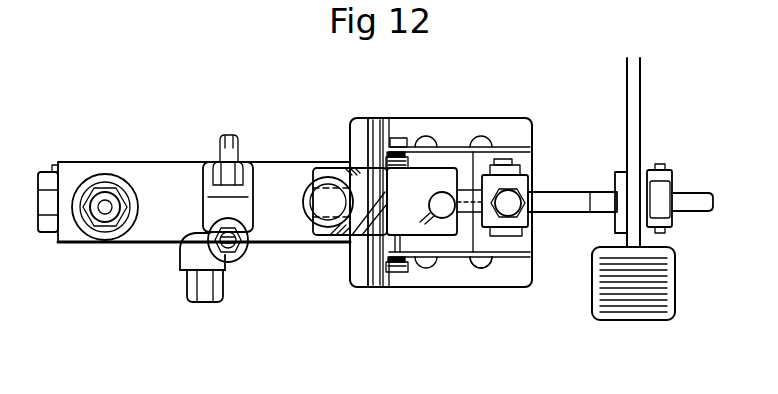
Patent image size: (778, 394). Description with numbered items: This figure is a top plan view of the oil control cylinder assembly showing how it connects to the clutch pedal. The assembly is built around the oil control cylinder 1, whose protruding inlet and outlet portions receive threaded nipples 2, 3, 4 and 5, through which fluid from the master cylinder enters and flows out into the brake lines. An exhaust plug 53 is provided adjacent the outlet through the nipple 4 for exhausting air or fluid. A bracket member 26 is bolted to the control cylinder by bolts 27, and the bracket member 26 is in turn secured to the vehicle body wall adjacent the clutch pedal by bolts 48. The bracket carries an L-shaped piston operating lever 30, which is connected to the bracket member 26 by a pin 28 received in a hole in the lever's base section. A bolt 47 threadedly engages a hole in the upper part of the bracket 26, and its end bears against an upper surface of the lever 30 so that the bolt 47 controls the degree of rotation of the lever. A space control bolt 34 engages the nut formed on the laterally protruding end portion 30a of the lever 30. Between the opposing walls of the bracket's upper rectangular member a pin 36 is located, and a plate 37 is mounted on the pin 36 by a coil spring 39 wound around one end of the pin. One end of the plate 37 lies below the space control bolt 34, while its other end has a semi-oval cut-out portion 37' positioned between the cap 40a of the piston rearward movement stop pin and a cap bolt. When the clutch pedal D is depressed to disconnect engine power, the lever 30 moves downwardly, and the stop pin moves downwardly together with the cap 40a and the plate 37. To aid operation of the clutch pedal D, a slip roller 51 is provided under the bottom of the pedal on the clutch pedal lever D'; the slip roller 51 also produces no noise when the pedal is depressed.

The oil control cylinder 1 is at (172, 158).
The nipple 2 is at (190, 288).
The nipple 3 is at (46, 234).
The nipple 4 is at (243, 243).
The nipple 5 is at (100, 187).
The bracket member 26 is at (386, 287).
The bolt 27 is at (388, 271).
The pin 28 is at (503, 236).
The L-shaped piston operating lever 30 is at (567, 205).
The laterally protruding end portion 30a is at (465, 189).
The space control bolt 34 is at (441, 194).
The pin 36 is at (403, 264).
The plate 37 is at (349, 159).
The semi-oval cut-out portion 37' is at (327, 270).
The coil spring 39 is at (402, 147).
The cap 40a is at (322, 200).
The bolt 47 is at (512, 198).
The bolt 48 is at (482, 270).
The slip roller 51 is at (663, 193).
The exhaust plug 53 is at (222, 160).
The clutch pedal D is at (633, 302).
The clutch pedal lever D' is at (652, 152).